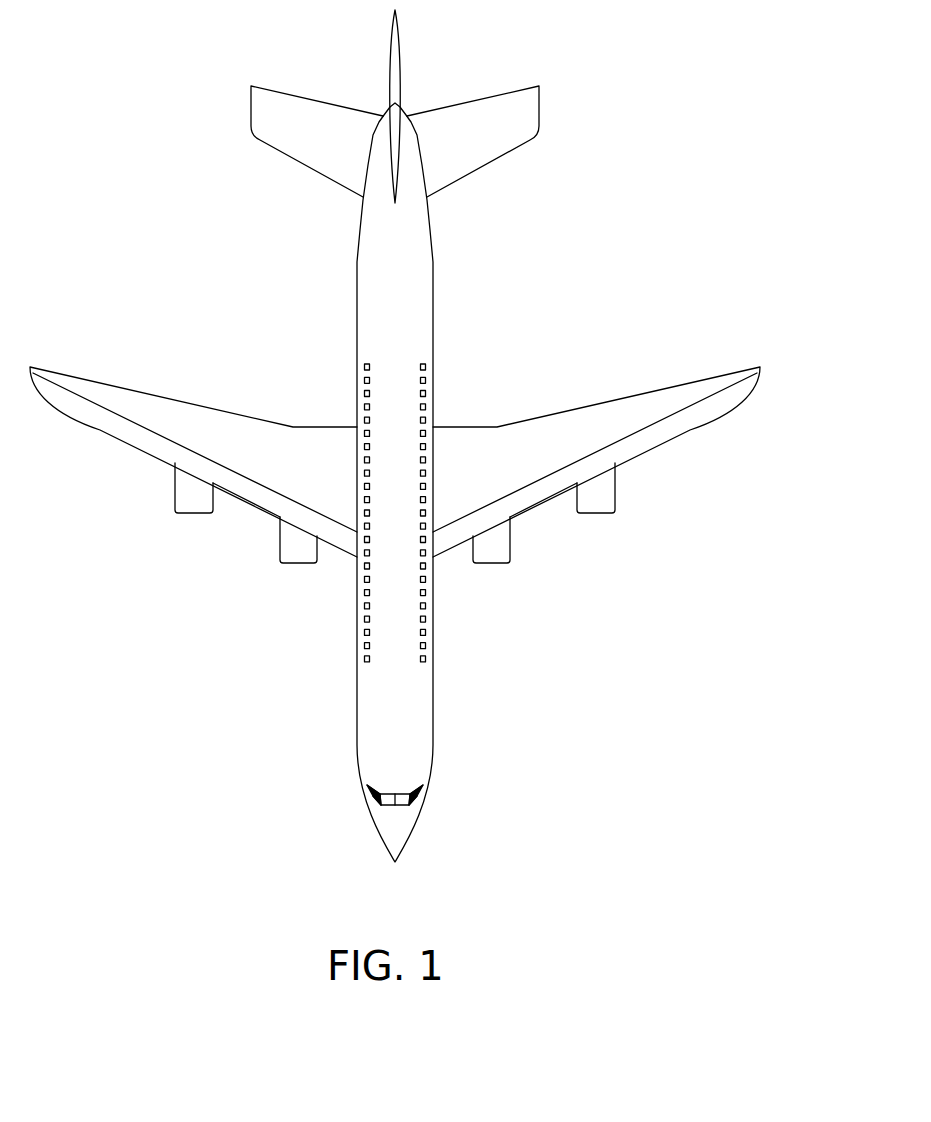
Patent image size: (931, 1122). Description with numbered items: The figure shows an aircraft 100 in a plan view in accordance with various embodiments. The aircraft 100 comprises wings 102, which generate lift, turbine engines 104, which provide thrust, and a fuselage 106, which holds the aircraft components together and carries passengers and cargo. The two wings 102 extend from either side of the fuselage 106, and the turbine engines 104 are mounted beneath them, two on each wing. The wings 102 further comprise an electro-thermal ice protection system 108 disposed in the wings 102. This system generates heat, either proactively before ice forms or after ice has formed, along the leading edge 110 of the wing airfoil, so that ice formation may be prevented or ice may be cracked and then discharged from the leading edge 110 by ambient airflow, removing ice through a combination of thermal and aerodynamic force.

The aircraft 100 is at (706, 144).
The wings 102 is at (125, 440).
The turbine engines 104 is at (190, 512).
The fuselage 106 is at (428, 722).
The electro-thermal ice protection system 108 is at (557, 448).
The leading edge 110 is at (250, 503).